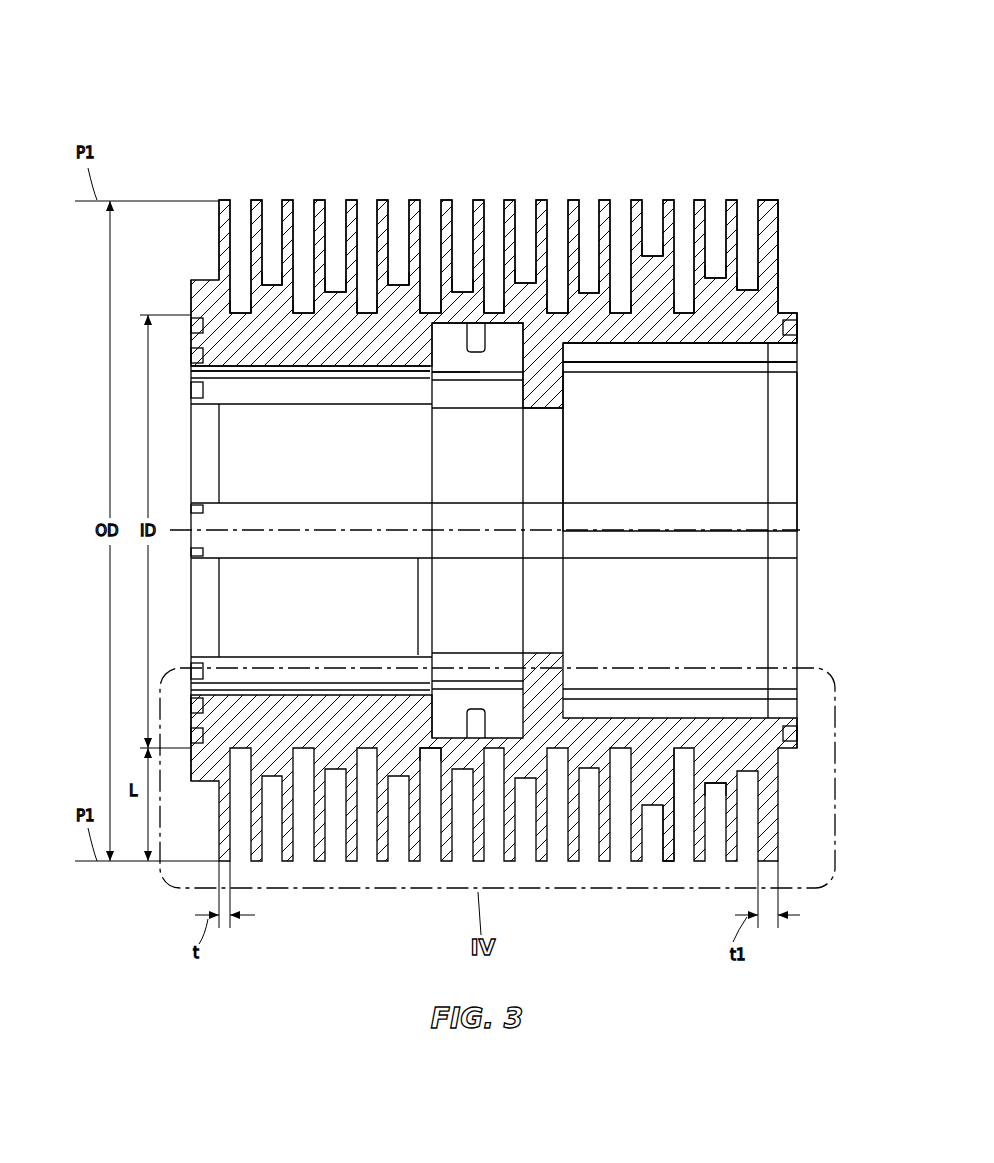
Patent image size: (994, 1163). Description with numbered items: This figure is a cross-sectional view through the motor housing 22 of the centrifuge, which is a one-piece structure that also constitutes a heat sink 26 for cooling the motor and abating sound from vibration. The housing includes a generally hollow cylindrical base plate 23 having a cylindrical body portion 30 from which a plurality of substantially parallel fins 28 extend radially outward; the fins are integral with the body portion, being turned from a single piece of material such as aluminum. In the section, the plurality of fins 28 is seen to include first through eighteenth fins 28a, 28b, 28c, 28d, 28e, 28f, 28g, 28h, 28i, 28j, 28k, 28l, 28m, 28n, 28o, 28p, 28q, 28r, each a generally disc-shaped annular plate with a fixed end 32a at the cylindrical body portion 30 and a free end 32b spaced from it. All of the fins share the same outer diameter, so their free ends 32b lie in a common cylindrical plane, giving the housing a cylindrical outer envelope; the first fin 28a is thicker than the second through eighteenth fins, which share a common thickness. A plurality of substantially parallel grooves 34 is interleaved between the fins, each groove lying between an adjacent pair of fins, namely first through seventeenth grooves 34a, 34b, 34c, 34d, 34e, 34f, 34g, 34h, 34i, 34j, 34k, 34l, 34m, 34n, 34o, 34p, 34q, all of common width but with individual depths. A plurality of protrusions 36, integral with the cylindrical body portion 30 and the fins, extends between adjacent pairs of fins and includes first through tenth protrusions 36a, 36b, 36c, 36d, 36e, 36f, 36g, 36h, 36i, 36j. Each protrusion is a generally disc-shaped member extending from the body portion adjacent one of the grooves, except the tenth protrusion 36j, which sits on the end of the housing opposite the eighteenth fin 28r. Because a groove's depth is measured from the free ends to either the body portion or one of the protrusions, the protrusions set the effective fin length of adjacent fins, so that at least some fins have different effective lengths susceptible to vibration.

The motor housing 22 is at (502, 434).
The heat sink 26 is at (733, 64).
The base plate 23 is at (756, 485).
The fins 28 is at (668, 867).
The first fin 28a is at (768, 199).
The second fin 28b is at (732, 199).
The third fin 28c is at (700, 199).
The fourth fin 28d is at (669, 199).
The fifth fin 28e is at (637, 199).
The sixth fin 28f is at (605, 199).
The seventh fin 28g is at (574, 199).
The eighth fin 28h is at (542, 199).
The ninth fin 28i is at (510, 199).
The tenth fin 28j is at (479, 199).
The eleventh fin 28k is at (447, 199).
The twelfth fin 28l is at (415, 199).
The thirteenth fin 28m is at (383, 199).
The fourteenth fin 28n is at (352, 199).
The fifteenth fin 28o is at (320, 199).
The sixteenth fin 28p is at (288, 199).
The seventeenth fin 28q is at (257, 199).
The eighteenth fin 28r is at (224, 199).
The cylindrical body portion 30 is at (767, 344).
The fixed end 32a is at (782, 310).
The free end 32b is at (783, 200).
The grooves 34 is at (437, 843).
The first groove 34a is at (749, 218).
The second groove 34b is at (717, 218).
The third groove 34c is at (685, 218).
The fourth groove 34d is at (653, 218).
The fifth groove 34e is at (621, 218).
The sixth groove 34f is at (590, 218).
The seventh groove 34g is at (559, 218).
The eighth groove 34h is at (527, 218).
The ninth groove 34i is at (495, 218).
The tenth groove 34j is at (464, 218).
The eleventh groove 34k is at (432, 218).
The twelfth groove 34l is at (401, 218).
The thirteenth groove 34m is at (369, 218).
The fourteenth groove 34n is at (338, 218).
The fifteenth groove 34o is at (306, 218).
The sixteenth groove 34p is at (276, 218).
The seventeenth groove 34q is at (245, 218).
The protrusions 36 is at (712, 771).
The first protrusion 36a is at (752, 300).
The second protrusion 36b is at (717, 300).
The third protrusion 36c is at (654, 300).
The fourth protrusion 36d is at (590, 300).
The fifth protrusion 36e is at (537, 302).
The sixth protrusion 36f is at (462, 300).
The seventh protrusion 36g is at (399, 300).
The eighth protrusion 36h is at (337, 300).
The ninth protrusion 36i is at (274, 302).
The tenth protrusion 36j is at (212, 300).